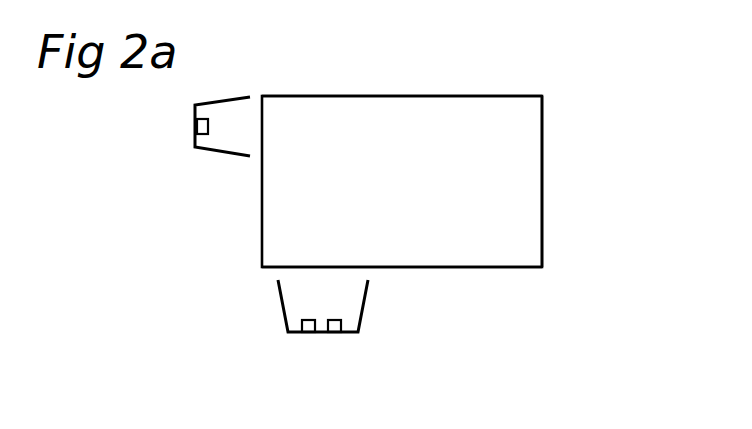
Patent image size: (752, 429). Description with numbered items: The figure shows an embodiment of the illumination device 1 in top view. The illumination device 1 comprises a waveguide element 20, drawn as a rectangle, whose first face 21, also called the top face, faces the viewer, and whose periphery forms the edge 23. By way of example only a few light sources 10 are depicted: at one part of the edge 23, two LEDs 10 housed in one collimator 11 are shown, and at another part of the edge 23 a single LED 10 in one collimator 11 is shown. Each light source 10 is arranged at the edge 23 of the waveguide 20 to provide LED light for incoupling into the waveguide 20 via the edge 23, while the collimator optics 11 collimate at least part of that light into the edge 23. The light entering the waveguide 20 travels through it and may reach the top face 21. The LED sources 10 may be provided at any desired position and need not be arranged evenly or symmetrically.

The illumination device 1 is at (540, 88).
The light source 10 is at (195, 130).
The collimator optics 11 is at (230, 88).
The waveguide element 20 is at (472, 88).
The first face 21 is at (507, 202).
The edge 23 is at (261, 235).